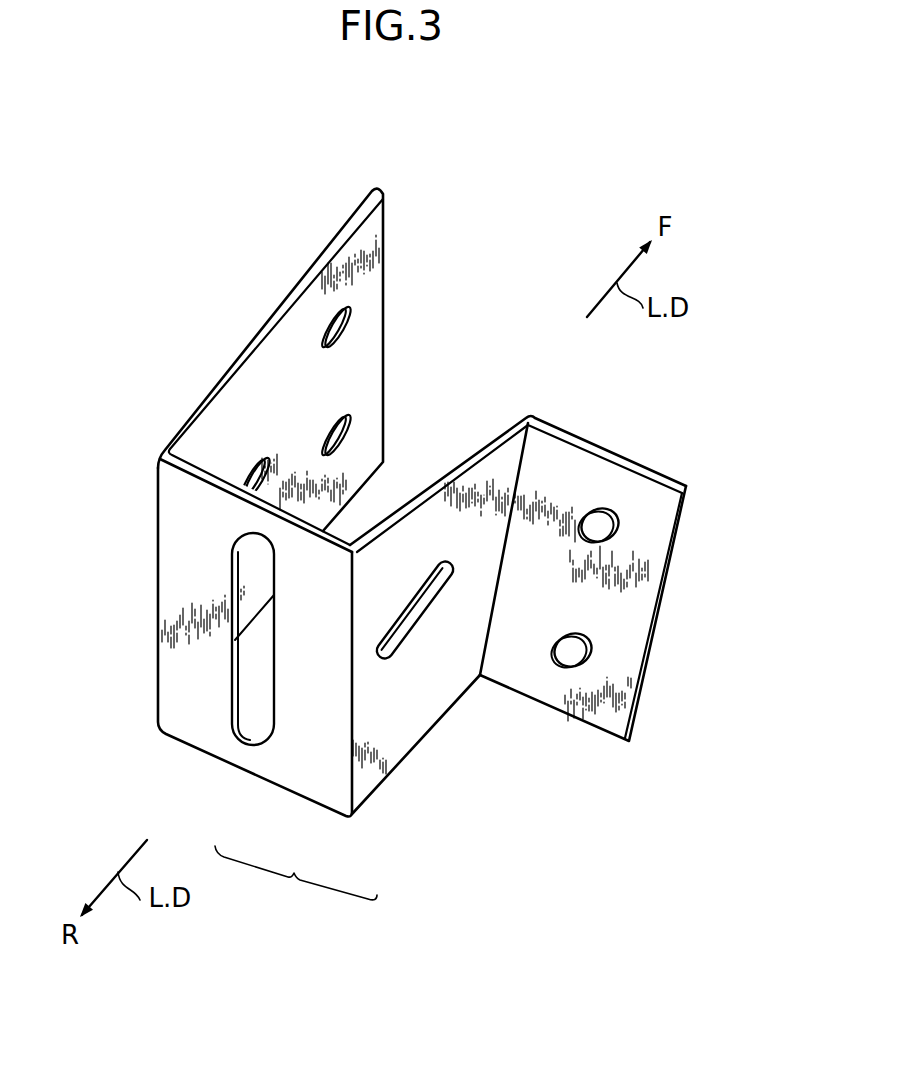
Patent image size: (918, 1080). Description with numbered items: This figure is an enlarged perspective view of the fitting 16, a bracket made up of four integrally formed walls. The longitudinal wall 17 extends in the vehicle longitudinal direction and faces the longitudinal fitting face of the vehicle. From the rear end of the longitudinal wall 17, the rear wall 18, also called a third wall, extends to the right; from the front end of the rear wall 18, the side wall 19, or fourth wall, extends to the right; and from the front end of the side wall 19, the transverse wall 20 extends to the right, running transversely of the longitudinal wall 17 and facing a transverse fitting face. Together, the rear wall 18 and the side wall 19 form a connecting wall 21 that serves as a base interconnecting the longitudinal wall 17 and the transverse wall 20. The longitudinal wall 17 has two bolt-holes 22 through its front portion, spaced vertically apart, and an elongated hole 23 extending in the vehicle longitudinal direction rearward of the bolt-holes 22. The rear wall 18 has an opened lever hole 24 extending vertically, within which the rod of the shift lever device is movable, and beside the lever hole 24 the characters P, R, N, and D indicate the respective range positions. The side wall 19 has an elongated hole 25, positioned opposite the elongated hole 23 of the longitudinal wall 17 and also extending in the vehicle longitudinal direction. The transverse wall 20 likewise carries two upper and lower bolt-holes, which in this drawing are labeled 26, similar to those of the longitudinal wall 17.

The fitting 16 is at (508, 227).
The longitudinal wall 17 is at (280, 367).
The rear wall 18 is at (222, 740).
The side wall 19 is at (380, 793).
The transverse wall 20 is at (600, 487).
The connecting wall 21 is at (296, 880).
The bolt-holes 22 is at (343, 443).
The elongated hole 23 is at (263, 463).
The lever hole 24 is at (240, 667).
The elongated hole 25 is at (423, 607).
The mounting holes 26 is at (603, 527).